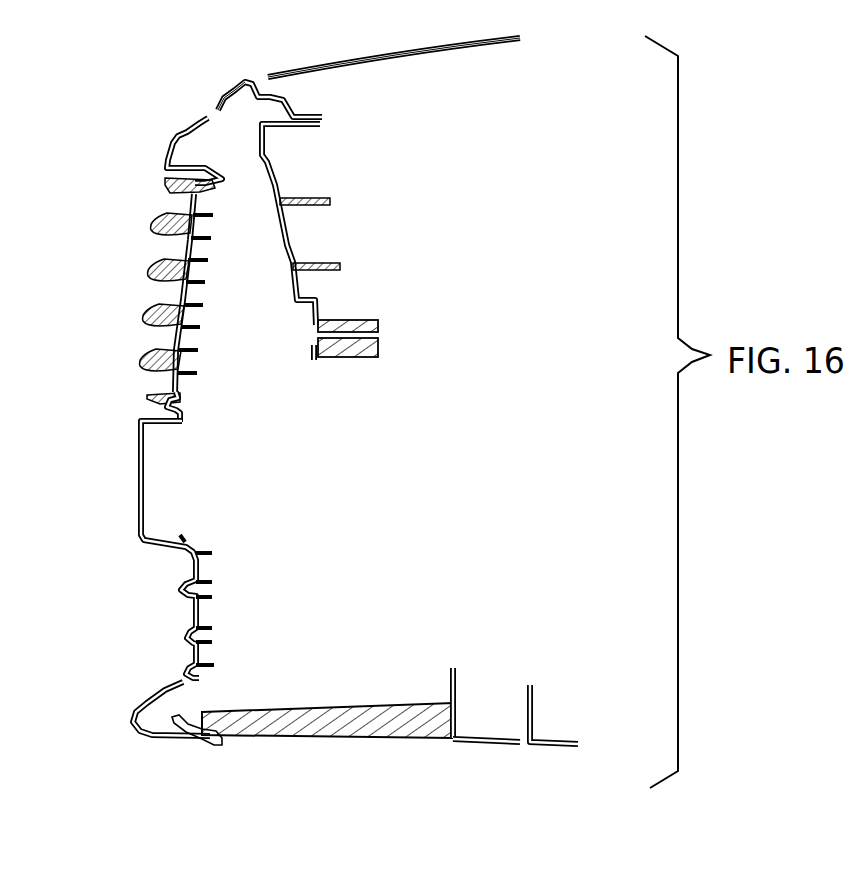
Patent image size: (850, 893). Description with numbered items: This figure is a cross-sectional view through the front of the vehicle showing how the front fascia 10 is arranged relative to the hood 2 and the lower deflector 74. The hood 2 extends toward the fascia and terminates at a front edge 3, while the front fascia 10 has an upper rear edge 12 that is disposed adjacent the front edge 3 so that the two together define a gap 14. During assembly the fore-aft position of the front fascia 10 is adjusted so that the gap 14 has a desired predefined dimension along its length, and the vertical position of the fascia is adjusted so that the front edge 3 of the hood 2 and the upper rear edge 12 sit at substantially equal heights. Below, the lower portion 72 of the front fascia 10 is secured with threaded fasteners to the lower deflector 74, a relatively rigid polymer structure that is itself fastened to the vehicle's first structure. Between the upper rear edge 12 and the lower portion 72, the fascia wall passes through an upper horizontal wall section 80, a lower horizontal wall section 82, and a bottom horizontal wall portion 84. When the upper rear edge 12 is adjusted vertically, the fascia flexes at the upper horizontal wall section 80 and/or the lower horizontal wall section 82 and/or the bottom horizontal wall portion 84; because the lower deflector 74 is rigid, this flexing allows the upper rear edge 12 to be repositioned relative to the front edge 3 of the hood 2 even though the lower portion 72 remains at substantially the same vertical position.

The hood 2 is at (362, 53).
The front edge 3 is at (260, 79).
The front fascia 10 is at (165, 143).
The upper rear edge 12 is at (245, 76).
The gap 14 is at (258, 78).
The lower portion 72 is at (206, 745).
The lower deflector 74 is at (358, 740).
The upper horizontal wall section 80 is at (183, 161).
The lower horizontal wall section 82 is at (157, 425).
The bottom horizontal wall portion 84 is at (177, 740).